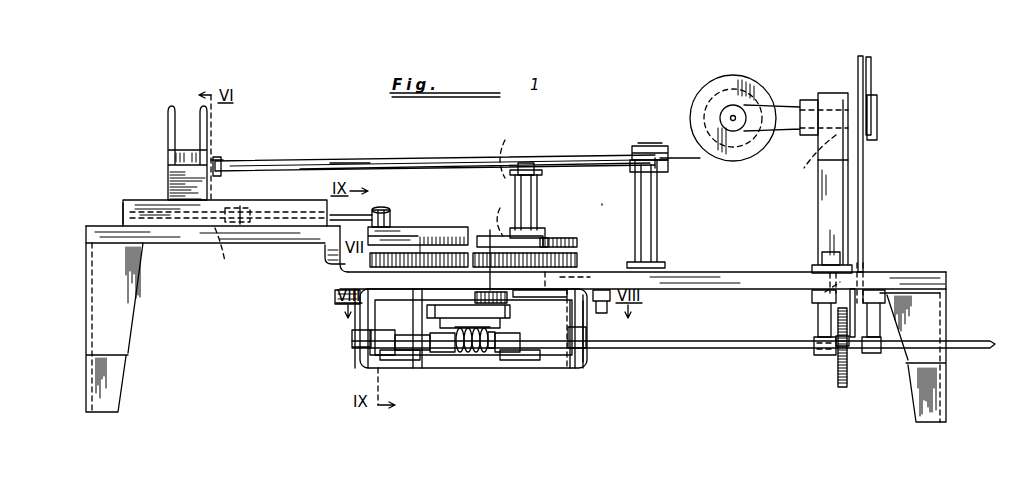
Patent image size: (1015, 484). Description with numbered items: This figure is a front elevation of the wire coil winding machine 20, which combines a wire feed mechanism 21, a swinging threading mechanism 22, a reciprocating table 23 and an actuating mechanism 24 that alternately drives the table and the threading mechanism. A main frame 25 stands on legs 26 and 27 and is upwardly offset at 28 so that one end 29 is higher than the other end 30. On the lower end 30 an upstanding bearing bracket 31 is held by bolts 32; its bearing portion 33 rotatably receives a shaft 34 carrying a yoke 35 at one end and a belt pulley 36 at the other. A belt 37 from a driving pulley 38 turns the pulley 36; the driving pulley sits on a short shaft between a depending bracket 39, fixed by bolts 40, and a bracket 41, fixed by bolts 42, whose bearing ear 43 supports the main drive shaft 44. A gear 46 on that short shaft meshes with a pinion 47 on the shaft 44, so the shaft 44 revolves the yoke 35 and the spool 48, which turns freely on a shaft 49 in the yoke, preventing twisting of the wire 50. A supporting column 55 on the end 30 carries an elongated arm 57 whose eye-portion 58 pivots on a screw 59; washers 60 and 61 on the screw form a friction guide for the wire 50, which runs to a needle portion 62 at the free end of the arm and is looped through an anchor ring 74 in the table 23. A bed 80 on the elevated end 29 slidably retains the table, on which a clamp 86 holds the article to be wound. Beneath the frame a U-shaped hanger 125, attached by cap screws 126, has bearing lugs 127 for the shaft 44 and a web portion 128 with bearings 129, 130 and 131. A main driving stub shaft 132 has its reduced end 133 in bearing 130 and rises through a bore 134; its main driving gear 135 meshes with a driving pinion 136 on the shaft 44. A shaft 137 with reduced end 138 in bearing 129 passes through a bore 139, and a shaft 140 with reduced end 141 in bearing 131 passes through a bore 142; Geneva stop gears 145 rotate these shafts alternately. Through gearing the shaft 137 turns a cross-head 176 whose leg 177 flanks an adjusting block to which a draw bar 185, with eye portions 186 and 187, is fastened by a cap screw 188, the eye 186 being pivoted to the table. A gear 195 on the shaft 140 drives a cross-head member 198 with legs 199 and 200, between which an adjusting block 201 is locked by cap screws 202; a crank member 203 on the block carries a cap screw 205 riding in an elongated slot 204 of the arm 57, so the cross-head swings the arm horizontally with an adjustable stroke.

The wire coil winding machine 20 is at (630, 218).
The wire feed mechanism 21 is at (800, 97).
The threading mechanism 22 is at (440, 154).
The reciprocating table 23 is at (148, 200).
The actuating mechanism 24 is at (370, 333).
The main frame 25 is at (769, 265).
The legs 26 is at (948, 314).
The legs 27 is at (86, 300).
The offset portion 28 is at (325, 262).
The elevated end 29 is at (95, 226).
The table portion 30 is at (905, 272).
The bearing bracket 31 is at (818, 186).
The bolts 32 is at (828, 256).
The bearing portion 33 is at (830, 93).
The shaft 34 is at (802, 159).
The yoke 35 is at (785, 82).
The belt pulley 36 is at (874, 92).
The belt 37 is at (864, 209).
The driving pulley 38 is at (866, 354).
The depending bracket 39 is at (881, 320).
The bolts 40 is at (870, 300).
The bracket 41 is at (462, 356).
The bolts 42 is at (824, 292).
The bearing ear 43 is at (818, 356).
The main drive shaft 44 is at (690, 349).
The gear 46 is at (846, 388).
The pinion 47 is at (839, 360).
The spool 48 is at (718, 77).
The shaft 49 is at (730, 117).
The wire 50 is at (382, 149).
The supporting column 55 is at (658, 221).
The elongated arm 57 is at (475, 167).
The eye-portion 58 is at (662, 182).
The screw 59 is at (640, 146).
The washer 60 is at (633, 153).
The washer 61 is at (666, 162).
The needle portion 62 is at (221, 180).
The anchor ring 74 is at (253, 198).
The bed 80 is at (123, 204).
The clamp 86 is at (187, 102).
The U-shaped hanger 125 is at (572, 368).
The cap screws 126 is at (345, 304).
The bearing lugs 127 is at (352, 336).
The horizontal web portion 128 is at (380, 356).
The bearing 129 is at (420, 357).
The bearing 130 is at (476, 356).
The bearing 131 is at (517, 355).
The main driving stub shaft 132 is at (466, 323).
The reduced end portion 133 is at (525, 357).
The bore 134 is at (442, 266).
The main driving gear 135 is at (445, 353).
The driving pinion 136 is at (487, 352).
The shaft 137 is at (413, 308).
The reduced end portion 138 is at (420, 357).
The bore 139 is at (419, 270).
The shaft 140 is at (536, 302).
The reduced end 141 is at (567, 370).
The bore 142 is at (573, 278).
The set of gears 145 is at (491, 285).
The cross-head 176 is at (440, 236).
The leg 177 is at (446, 240).
The draw bar 185 is at (374, 214).
The eye portion 186 is at (222, 262).
The eye portion 187 is at (391, 213).
The cap screw 188 is at (392, 208).
The externally toothed gear 195 is at (578, 262).
The cross-head member 198 is at (578, 243).
The leg 199 is at (513, 214).
The leg 200 is at (541, 230).
The adjusting block 201 is at (537, 228).
The cap screws 202 is at (546, 245).
The crank member 203 is at (538, 186).
The elongated slot 204 is at (518, 151).
The cap screw 205 is at (535, 163).